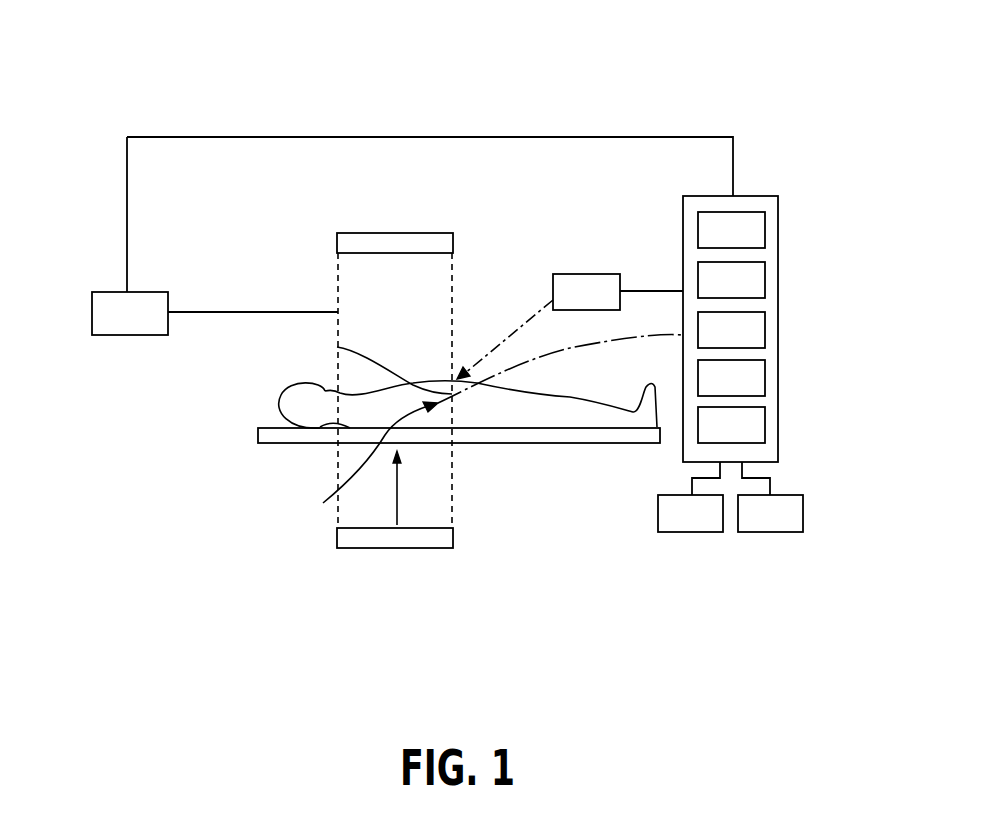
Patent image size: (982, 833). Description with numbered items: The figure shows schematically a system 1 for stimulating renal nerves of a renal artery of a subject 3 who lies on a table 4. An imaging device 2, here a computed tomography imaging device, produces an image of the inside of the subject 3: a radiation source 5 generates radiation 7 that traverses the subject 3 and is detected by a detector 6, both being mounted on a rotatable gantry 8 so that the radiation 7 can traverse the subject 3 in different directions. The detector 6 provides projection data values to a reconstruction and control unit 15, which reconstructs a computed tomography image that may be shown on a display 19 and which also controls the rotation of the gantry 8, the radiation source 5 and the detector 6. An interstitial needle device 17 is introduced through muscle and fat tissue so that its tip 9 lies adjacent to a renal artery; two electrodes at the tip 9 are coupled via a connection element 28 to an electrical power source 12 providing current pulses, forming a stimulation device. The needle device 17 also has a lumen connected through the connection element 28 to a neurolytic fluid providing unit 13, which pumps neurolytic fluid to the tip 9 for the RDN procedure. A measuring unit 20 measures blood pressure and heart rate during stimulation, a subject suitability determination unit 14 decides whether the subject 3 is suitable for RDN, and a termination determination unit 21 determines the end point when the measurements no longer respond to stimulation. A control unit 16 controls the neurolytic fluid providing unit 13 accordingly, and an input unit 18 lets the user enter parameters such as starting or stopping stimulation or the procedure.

The system 1 is at (638, 99).
The imaging device 2 is at (288, 533).
The subject 3 is at (287, 387).
The table 4 is at (268, 446).
The radiation source 5 is at (453, 537).
The detector 6 is at (453, 243).
The radiation 7 is at (398, 495).
The rotatable gantry 8 is at (338, 281).
The tip 9 is at (370, 463).
The electrical power source 12 is at (765, 222).
The neurolytic fluid providing unit 13 is at (765, 273).
The subject suitability determination unit 14 is at (765, 326).
The reconstruction and control unit 15 is at (103, 337).
The control unit 16 is at (765, 378).
The interstitial needle device 17 is at (337, 347).
The input unit 18 is at (688, 532).
The display 19 is at (767, 532).
The measuring unit 20 is at (590, 274).
The termination determination unit 21 is at (765, 432).
The connection element 28 is at (612, 344).